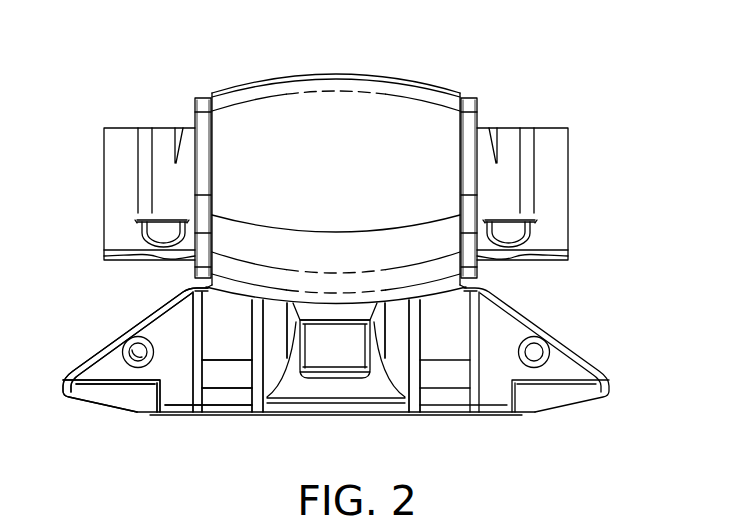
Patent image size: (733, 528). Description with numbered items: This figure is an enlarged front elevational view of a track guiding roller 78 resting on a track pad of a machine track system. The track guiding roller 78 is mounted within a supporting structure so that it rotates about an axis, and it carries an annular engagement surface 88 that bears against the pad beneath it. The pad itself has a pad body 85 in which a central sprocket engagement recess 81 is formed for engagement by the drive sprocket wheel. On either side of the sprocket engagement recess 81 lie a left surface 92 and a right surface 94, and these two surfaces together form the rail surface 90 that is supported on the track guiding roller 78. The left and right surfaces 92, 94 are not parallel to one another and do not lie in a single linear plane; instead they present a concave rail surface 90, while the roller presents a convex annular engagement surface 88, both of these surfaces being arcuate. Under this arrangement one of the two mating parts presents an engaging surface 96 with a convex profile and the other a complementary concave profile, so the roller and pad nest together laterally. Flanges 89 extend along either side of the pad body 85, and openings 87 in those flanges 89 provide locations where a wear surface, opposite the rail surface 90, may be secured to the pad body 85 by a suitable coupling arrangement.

The track guiding roller 78 is at (442, 88).
The sprocket engagement recess 81 is at (405, 288).
The pad body 85 is at (373, 387).
The openings 87 is at (135, 358).
The annular engagement surface 88 is at (468, 303).
The flanges 89 is at (557, 360).
The rail surface 90 is at (283, 300).
The left surface 92 is at (240, 295).
The right surface 94 is at (405, 288).
The engaging surface 96 is at (433, 297).